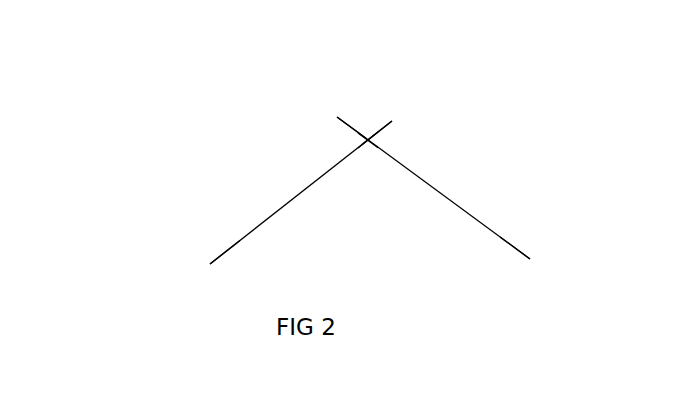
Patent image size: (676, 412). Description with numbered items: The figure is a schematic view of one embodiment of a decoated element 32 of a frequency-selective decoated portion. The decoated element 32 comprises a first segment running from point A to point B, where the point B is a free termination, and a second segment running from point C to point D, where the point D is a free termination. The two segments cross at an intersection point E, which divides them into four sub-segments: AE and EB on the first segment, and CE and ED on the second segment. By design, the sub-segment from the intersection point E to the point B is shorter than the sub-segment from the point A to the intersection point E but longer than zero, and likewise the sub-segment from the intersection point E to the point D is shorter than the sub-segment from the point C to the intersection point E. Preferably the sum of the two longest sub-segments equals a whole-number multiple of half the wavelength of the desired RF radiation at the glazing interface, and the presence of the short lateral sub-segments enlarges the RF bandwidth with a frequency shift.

The decoated element 32 is at (230, 163).
The point A is at (213, 255).
The point B is at (386, 124).
The point C is at (529, 255).
The point D is at (342, 119).
The intersection point E is at (368, 154).